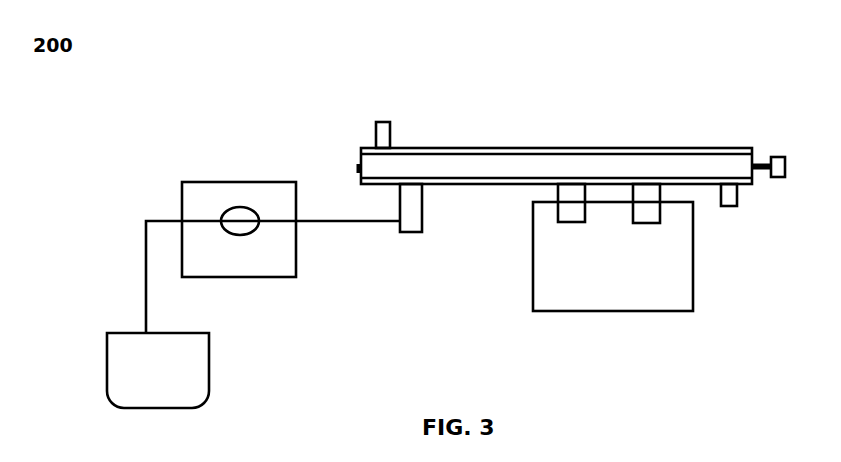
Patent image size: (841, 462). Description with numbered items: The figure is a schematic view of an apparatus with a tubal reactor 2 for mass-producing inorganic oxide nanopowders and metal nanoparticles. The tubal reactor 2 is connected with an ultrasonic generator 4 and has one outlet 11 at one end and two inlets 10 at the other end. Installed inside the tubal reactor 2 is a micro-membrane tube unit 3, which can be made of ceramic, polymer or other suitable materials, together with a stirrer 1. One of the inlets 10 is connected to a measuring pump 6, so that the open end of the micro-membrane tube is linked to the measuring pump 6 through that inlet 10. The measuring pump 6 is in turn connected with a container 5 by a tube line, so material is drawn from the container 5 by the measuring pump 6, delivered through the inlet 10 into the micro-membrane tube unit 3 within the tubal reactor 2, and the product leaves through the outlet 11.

The stirrer 1 is at (773, 155).
The tubal reactor 2 is at (487, 147).
The micro-membrane tube unit 3 is at (612, 152).
The ultrasonic generator 4 is at (603, 294).
The container 5 is at (120, 332).
The measuring pump 6 is at (235, 181).
The inlet 10 is at (383, 120).
The outlet 11 is at (730, 207).